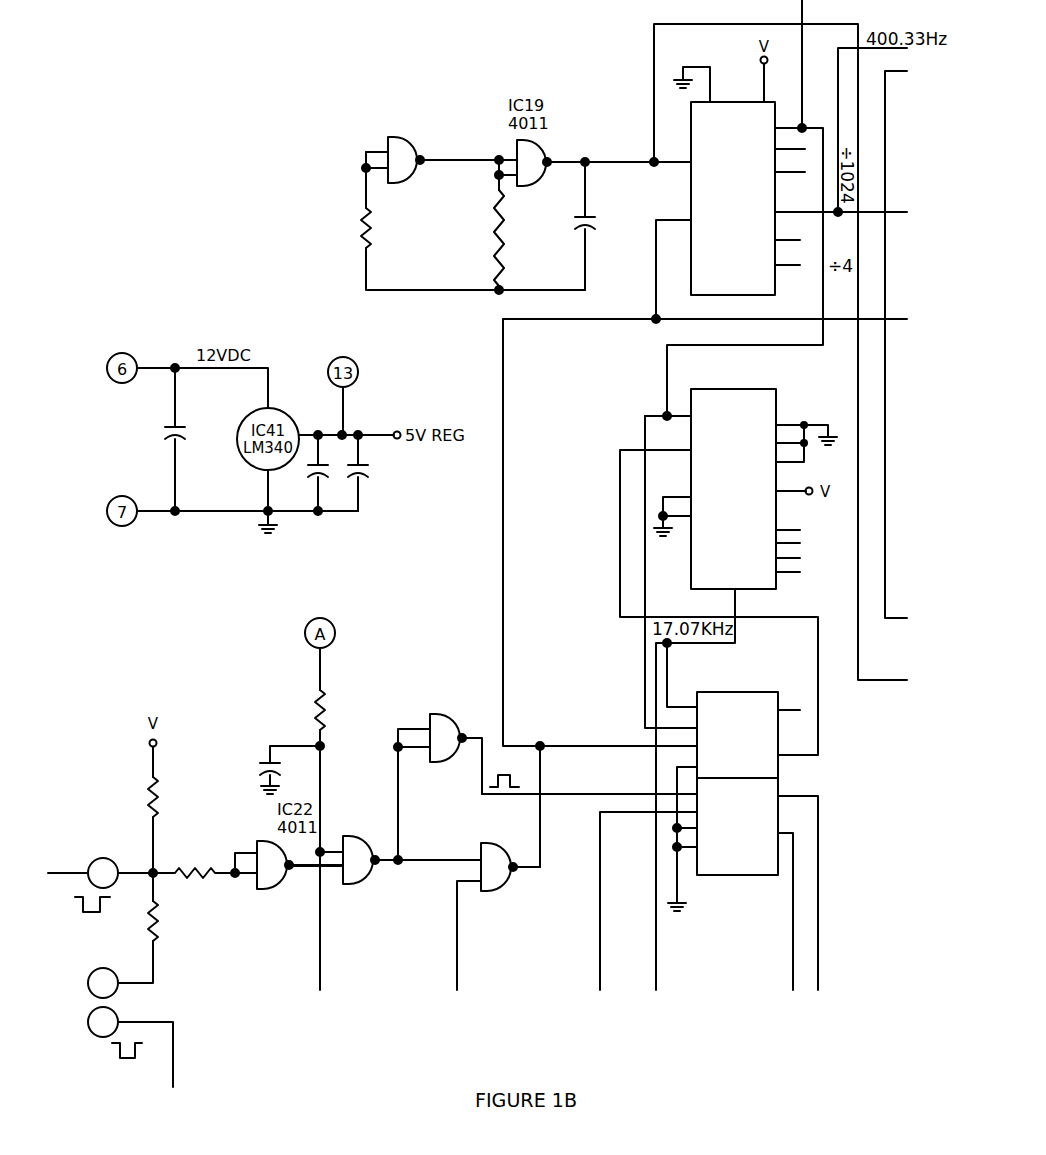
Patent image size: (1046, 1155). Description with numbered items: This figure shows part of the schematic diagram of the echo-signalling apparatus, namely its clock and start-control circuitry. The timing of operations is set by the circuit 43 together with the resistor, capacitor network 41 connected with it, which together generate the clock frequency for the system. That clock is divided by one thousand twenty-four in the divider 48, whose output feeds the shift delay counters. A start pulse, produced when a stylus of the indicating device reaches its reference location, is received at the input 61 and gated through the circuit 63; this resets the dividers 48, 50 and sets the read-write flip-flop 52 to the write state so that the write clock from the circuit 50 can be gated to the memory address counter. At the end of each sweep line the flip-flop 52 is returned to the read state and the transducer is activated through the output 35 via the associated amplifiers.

The output 35 is at (70, 1012).
The resistor, capacitor network 41 is at (444, 238).
The circuit 43 is at (452, 137).
The divider 48 is at (727, 102).
The circuit 50 is at (774, 389).
The read-write flip-flop 52 is at (779, 778).
The input 61 is at (85, 857).
The circuit 63 is at (381, 813).